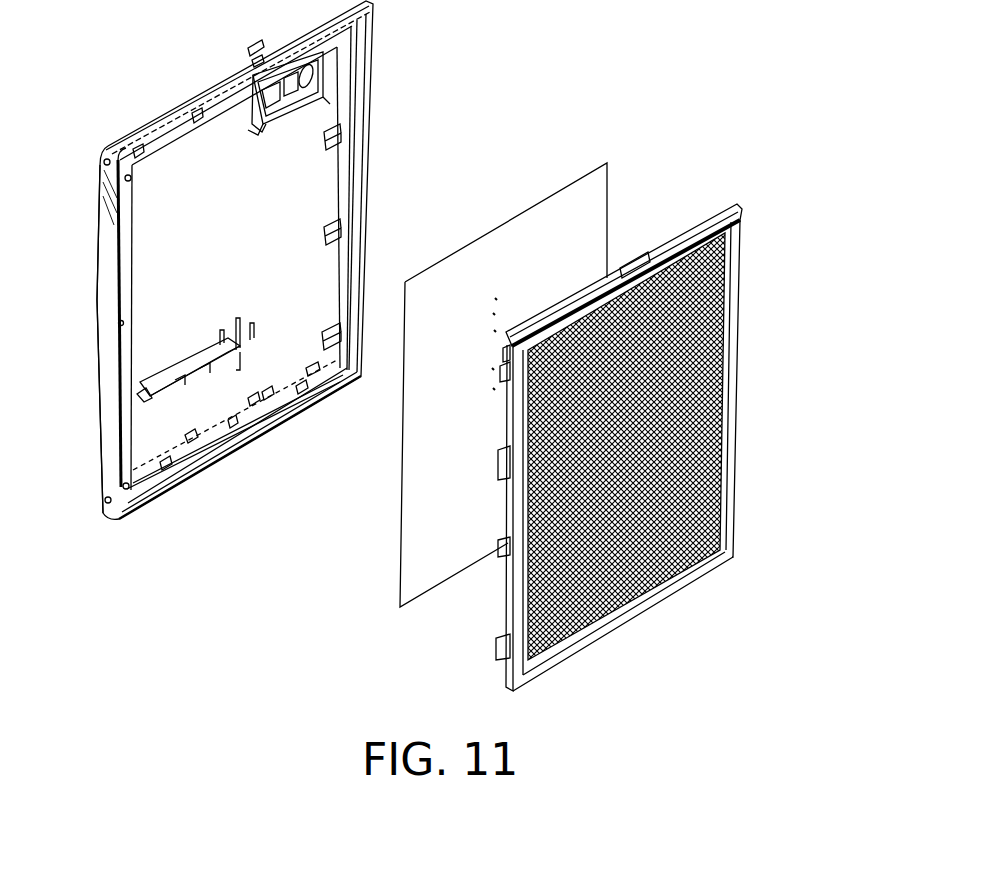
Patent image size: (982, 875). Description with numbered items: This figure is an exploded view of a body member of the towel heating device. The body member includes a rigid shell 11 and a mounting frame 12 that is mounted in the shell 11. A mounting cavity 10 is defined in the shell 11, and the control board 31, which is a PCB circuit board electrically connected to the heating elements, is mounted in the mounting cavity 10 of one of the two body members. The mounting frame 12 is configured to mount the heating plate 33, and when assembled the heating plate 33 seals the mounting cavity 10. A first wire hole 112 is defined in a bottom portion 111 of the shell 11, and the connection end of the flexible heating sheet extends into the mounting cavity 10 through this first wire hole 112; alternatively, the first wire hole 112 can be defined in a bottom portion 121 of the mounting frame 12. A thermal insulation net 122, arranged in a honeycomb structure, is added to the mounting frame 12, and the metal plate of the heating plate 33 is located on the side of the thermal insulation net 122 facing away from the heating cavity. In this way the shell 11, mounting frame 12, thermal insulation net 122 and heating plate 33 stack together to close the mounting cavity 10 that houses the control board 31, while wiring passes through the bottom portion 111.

The mounting cavity 10 is at (205, 288).
The shell 11 is at (110, 252).
The bottom portion 111 is at (190, 467).
The first wire hole 112 is at (237, 442).
The control board 31 is at (173, 387).
The heating plate 33 is at (544, 232).
The mounting frame 12 is at (676, 447).
The bottom portion 121 is at (638, 615).
The thermal insulation net 122 is at (730, 333).